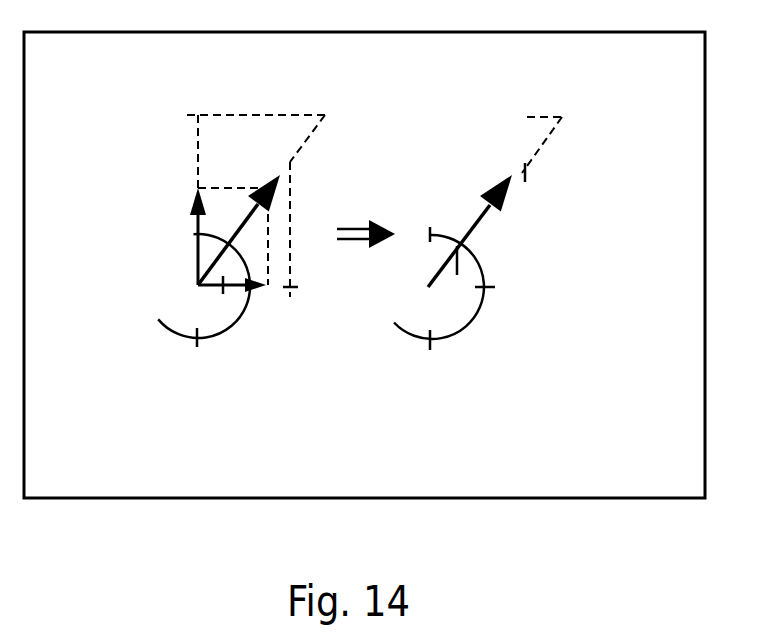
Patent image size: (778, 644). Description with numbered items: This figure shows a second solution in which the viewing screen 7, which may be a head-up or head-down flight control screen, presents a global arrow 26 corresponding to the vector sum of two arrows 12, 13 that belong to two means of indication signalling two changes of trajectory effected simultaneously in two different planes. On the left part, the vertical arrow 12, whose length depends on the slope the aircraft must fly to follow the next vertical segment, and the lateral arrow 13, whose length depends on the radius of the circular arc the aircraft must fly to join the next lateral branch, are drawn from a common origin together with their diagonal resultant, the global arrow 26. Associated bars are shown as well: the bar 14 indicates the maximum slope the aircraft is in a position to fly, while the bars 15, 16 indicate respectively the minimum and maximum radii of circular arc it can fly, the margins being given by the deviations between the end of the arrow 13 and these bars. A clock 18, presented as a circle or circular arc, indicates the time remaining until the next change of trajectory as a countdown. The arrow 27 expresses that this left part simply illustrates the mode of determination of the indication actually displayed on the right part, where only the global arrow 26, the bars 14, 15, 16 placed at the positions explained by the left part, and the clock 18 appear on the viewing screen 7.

The viewing screen 7 is at (520, 499).
The arrow 12 is at (197, 218).
The arrow 13 is at (233, 288).
The bar 14 is at (150, 117).
The bar 15 is at (200, 305).
The bar 16 is at (312, 292).
The clock 18 is at (168, 370).
The global arrow 26 is at (240, 230).
The arrow 27 is at (352, 228).